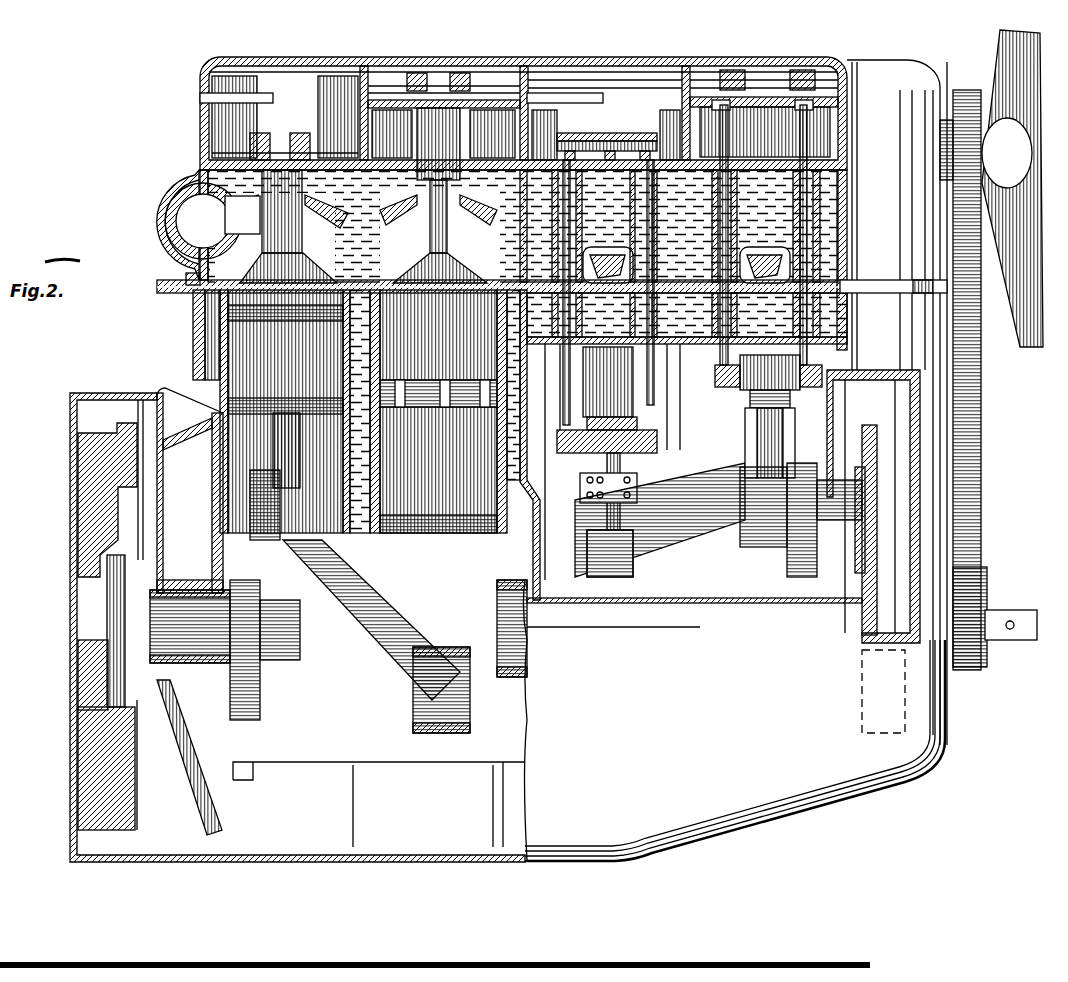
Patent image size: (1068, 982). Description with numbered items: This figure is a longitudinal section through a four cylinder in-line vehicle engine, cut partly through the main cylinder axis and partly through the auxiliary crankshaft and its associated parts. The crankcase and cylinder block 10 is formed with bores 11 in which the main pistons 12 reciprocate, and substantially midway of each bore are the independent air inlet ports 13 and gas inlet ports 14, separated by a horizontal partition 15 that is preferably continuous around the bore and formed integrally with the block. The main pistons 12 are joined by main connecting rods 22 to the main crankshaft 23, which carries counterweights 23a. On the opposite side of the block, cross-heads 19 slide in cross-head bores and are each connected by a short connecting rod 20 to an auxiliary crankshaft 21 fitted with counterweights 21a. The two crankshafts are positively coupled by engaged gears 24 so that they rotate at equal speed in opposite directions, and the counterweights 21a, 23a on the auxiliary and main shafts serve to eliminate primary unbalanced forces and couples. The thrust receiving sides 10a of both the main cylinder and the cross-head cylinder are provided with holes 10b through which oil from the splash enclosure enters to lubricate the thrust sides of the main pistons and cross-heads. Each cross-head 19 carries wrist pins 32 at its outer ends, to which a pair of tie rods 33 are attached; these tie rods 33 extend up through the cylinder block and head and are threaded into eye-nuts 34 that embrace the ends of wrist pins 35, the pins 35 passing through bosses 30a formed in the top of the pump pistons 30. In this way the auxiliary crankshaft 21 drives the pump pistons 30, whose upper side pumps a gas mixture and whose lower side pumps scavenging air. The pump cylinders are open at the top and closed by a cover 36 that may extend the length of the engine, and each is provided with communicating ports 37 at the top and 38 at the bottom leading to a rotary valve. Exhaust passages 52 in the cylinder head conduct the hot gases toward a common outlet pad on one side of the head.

The crankcase and cylinder block 10 is at (203, 330).
The thrust receiving sides 10a is at (890, 423).
The holes 10b is at (625, 488).
The bores 11 is at (438, 335).
The main pistons 12 is at (362, 411).
The air inlet ports 13 is at (433, 380).
The gas inlet ports 14 is at (430, 400).
The horizontal partition 15 is at (190, 382).
The cross-heads 19 is at (767, 368).
The short connecting rod 20 is at (763, 423).
The auxiliary crankshaft 21 is at (660, 520).
The counterweights 21a is at (793, 537).
The main connecting rods 22 is at (287, 473).
The main crankshaft 23 is at (337, 603).
The counterweights 23a is at (260, 692).
The gears 24 is at (910, 503).
The pump pistons 30 is at (383, 100).
The bosses 30a is at (777, 63).
The wrist pins 32 is at (650, 442).
The tie rods 33 is at (803, 223).
The eye-nuts 34 is at (457, 73).
The wrist pins 35 is at (605, 133).
The cover 36 is at (557, 57).
The communicating ports 37 is at (193, 90).
The communicating ports 38 is at (385, 167).
The exhaust passages 52 is at (247, 203).